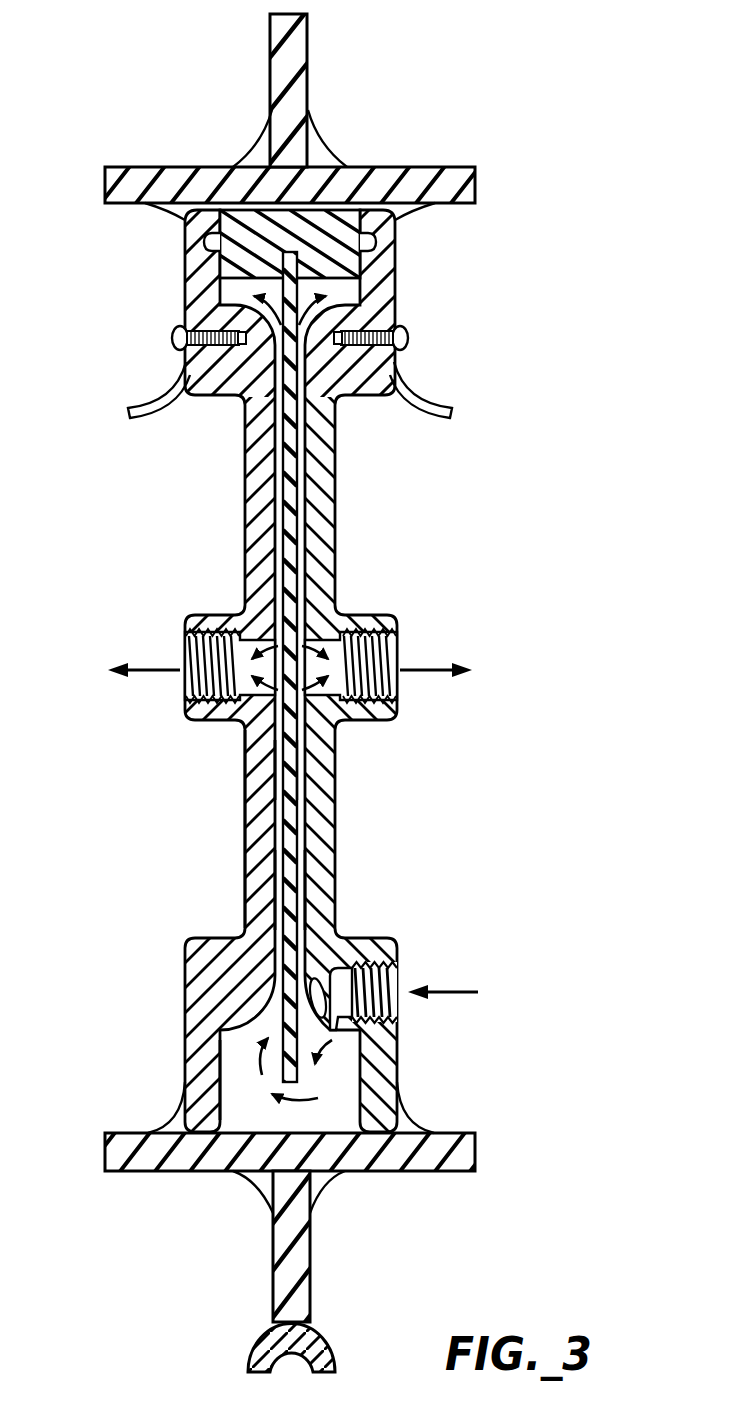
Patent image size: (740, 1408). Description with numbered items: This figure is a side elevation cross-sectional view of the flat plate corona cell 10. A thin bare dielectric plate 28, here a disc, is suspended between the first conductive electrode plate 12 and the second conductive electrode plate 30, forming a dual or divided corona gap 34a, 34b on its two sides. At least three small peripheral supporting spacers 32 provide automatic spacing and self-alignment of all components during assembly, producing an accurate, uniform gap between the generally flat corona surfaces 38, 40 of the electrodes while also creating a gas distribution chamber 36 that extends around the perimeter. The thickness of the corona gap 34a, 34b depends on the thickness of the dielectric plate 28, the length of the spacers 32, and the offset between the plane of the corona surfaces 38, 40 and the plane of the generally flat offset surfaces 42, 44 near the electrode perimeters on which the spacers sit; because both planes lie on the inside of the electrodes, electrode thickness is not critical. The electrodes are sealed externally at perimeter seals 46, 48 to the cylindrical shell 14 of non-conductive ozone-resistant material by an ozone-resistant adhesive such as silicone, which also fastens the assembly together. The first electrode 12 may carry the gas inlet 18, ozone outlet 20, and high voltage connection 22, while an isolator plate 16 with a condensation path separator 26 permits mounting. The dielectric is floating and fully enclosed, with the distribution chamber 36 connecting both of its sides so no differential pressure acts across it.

The flat plate corona cell 10 is at (178, 1215).
The first conductive electrode plate 12 is at (335, 830).
The housing or shell 14 is at (477, 185).
The isolator plate 16 is at (308, 96).
The gas inlet 18 is at (400, 972).
The ozone outlet 20 is at (187, 645).
The high voltage connection 22 is at (410, 338).
The condensation path separator 26 is at (332, 1352).
The dielectric plate 28 is at (291, 928).
The second conductive electrode plate 30 is at (245, 846).
The peripheral supporting spacers 32 is at (346, 256).
The corona gap 34a is at (300, 772).
The corona gap 34b is at (275, 774).
The gas distribution chamber 36 is at (338, 1092).
The corona surface 38 is at (306, 895).
The corona surface 40 is at (274, 886).
The offset surface 42 is at (368, 1062).
The offset surface 44 is at (196, 1048).
The perimeter seal 46 is at (402, 214).
The perimeter seal 48 is at (178, 212).